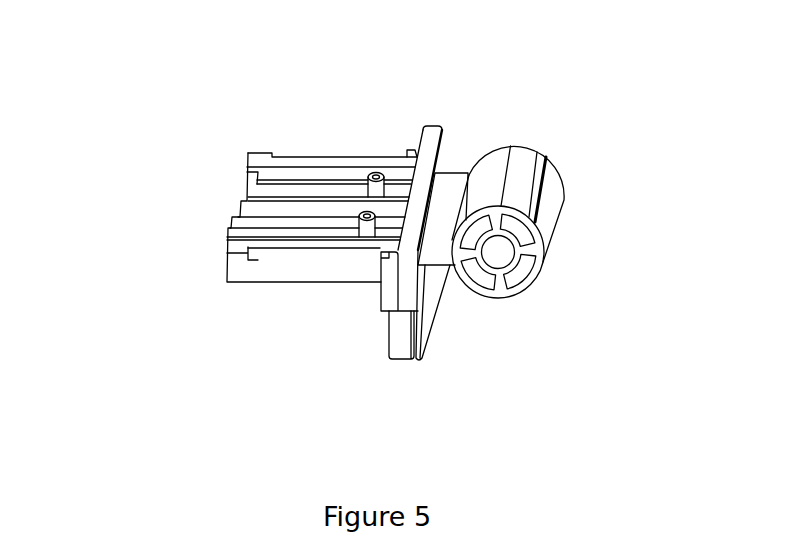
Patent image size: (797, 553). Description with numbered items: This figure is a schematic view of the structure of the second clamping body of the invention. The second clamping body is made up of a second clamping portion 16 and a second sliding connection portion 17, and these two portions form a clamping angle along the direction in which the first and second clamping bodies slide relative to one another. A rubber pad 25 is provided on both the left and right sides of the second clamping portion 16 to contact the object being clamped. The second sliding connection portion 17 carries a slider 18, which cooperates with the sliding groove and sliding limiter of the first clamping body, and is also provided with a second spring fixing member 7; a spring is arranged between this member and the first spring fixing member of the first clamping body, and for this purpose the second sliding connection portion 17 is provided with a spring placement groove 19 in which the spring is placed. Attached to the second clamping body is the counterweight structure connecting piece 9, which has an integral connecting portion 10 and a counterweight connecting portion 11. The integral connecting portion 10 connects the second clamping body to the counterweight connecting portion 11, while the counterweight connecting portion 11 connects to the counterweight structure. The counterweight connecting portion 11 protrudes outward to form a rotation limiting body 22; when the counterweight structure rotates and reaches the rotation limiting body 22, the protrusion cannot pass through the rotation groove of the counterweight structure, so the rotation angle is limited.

The second spring fixing member 7 is at (372, 174).
The counterweight structure connecting piece 9 is at (563, 132).
The integral connecting portion 10 is at (455, 174).
The counterweight connecting portion 11 is at (562, 170).
The second clamping portion 16 is at (397, 333).
The second sliding connection portion 17 is at (292, 268).
The slider 18 is at (233, 258).
The spring placement groove 19 is at (253, 192).
The rotation limiting body 22 is at (533, 218).
The rubber pad 25 is at (427, 322).